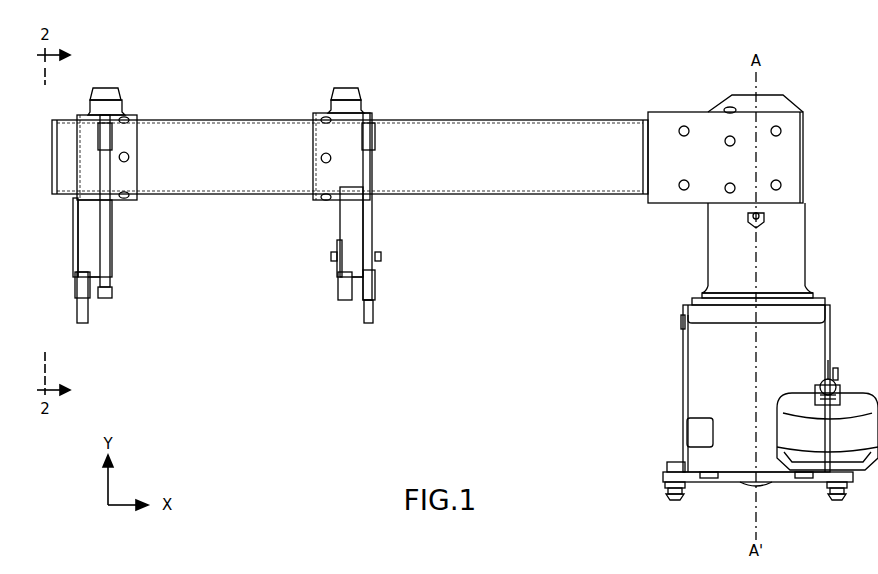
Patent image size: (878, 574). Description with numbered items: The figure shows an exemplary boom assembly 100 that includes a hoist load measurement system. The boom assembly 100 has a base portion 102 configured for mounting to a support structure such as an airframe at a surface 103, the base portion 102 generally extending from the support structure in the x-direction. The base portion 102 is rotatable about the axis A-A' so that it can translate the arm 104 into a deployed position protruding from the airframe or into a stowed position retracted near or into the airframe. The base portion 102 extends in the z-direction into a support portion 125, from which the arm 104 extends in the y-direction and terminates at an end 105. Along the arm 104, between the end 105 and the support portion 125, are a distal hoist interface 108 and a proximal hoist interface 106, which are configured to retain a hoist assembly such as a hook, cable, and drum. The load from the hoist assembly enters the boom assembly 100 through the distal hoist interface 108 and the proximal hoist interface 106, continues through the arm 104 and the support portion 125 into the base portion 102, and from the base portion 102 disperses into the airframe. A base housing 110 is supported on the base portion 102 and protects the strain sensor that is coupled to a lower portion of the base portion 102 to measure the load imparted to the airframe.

The boom assembly 100 is at (822, 84).
The base portion 102 is at (785, 258).
The surface 103 is at (793, 482).
The arm 104 is at (497, 128).
The end 105 is at (48, 175).
The proximal hoist interface 106 is at (352, 231).
The distal hoist interface 108 is at (90, 237).
The base housing 110 is at (808, 350).
The support portion 125 is at (785, 165).